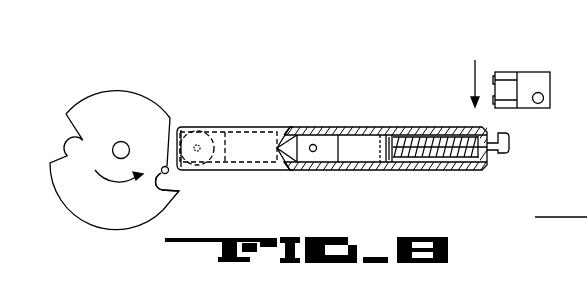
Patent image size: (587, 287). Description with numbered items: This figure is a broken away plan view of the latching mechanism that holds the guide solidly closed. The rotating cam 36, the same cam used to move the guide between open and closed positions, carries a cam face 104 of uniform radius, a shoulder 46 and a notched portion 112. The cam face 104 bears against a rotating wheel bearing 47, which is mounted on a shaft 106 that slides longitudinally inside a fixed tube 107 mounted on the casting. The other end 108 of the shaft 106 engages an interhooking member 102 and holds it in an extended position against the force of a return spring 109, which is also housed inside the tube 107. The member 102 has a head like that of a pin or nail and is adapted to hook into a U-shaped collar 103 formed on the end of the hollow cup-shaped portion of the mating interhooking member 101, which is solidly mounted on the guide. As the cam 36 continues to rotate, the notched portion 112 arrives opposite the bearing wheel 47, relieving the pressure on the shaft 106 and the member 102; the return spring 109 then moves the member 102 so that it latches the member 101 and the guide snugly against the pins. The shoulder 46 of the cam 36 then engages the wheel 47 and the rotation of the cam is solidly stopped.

The rotating cam 36 is at (92, 212).
The shoulder 46 is at (178, 189).
The rotating wheel bearing 47 is at (195, 134).
The interhooking member 101 is at (528, 69).
The interhooking member 102 is at (502, 158).
The U-shaped collar 103 is at (497, 83).
The cam face 104 is at (147, 103).
The shaft 106 is at (347, 138).
The fixed tube 107 is at (252, 132).
The end of the member 108 is at (377, 138).
The return spring 109 is at (428, 132).
The notched portion 112 is at (162, 167).